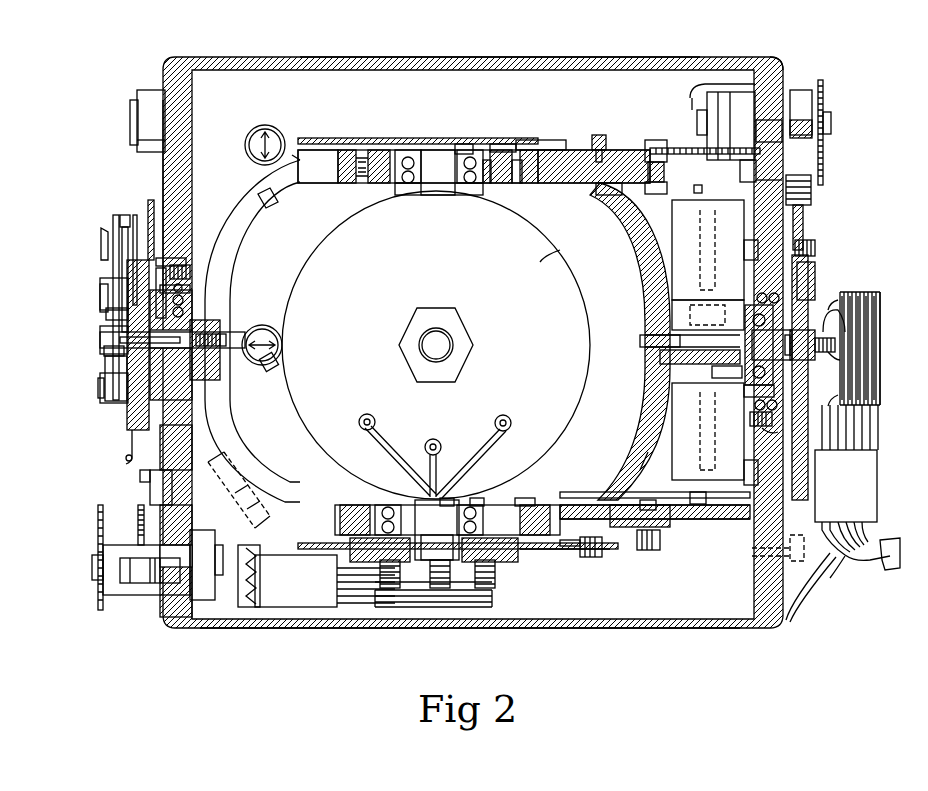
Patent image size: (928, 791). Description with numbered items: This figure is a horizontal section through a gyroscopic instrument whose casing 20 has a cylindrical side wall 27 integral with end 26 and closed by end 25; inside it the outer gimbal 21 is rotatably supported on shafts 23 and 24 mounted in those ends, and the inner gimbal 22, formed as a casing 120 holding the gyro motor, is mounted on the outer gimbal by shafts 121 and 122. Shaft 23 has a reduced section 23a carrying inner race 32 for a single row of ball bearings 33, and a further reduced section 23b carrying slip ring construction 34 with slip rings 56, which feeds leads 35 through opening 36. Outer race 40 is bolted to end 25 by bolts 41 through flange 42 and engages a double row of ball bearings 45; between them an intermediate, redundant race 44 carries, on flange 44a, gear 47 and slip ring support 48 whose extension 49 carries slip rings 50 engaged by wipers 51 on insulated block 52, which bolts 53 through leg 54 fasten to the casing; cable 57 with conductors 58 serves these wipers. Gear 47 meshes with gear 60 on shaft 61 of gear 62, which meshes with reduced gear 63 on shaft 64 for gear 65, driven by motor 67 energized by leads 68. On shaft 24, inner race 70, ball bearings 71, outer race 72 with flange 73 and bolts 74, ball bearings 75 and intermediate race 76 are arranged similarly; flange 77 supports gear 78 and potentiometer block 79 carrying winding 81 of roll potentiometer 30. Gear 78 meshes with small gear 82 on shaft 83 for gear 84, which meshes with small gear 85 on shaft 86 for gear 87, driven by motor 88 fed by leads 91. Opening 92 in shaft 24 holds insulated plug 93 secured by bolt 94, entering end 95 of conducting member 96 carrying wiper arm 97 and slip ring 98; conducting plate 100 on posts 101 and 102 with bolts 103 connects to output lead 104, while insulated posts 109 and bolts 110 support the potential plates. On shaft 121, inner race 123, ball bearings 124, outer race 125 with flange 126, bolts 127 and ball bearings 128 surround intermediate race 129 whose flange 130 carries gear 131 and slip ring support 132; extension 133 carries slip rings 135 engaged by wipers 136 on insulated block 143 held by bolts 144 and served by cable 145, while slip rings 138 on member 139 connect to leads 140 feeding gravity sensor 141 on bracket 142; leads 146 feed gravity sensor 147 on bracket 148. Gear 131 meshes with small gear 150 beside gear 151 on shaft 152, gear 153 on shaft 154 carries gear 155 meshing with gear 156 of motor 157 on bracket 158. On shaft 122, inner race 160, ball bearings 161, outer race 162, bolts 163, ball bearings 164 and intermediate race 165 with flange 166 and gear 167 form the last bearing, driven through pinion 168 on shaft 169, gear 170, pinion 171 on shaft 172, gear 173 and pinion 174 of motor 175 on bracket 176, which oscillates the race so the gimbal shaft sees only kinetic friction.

The casing 20 is at (518, 56).
The outer gimbal 21 is at (252, 218).
The inner gimbal 22 is at (588, 338).
The shaft 23 is at (752, 326).
The reduced section 23a is at (772, 345).
The further reduced shaft section 23b is at (801, 345).
The shaft 24 is at (222, 368).
The end 25 is at (783, 72).
The end 26 is at (192, 136).
The cylindrical side wall 27 is at (612, 58).
The roll potentiometer 30 is at (110, 215).
The inner race 32 is at (752, 370).
The ball bearings 33 is at (748, 392).
The slip ring construction 34 is at (822, 336).
The leads 35 is at (658, 344).
The opening 36 is at (708, 360).
The outer ball bearing race 40 is at (756, 410).
The bolts 41 is at (752, 426).
The flange 42 is at (765, 441).
The intermediate, redundant ball bearing race 44 is at (756, 300).
The flange 44a is at (815, 280).
The ball bearings 45 is at (746, 282).
The gear 47 is at (808, 470).
The cylindrical slip ring support 48 is at (813, 262).
The extension 49 is at (880, 298).
The slip rings 50 is at (870, 290).
The wipers 51 is at (880, 432).
The insulated block 52 is at (870, 484).
The bolts 53 is at (753, 552).
The leg 54 is at (806, 598).
The slip ring 56 is at (826, 356).
The cable 57 is at (882, 542).
The conductors 58 is at (858, 560).
The gear 60 is at (797, 180).
The shaft 61 is at (769, 166).
The gear 62 is at (805, 222).
The reduced gear 63 is at (798, 120).
The shaft 64 is at (769, 117).
The gear 65 is at (826, 105).
The motor 67 is at (722, 160).
The leads 68 is at (702, 96).
The inner race 70 is at (195, 392).
The ball bearings 71 is at (190, 296).
The outer race 72 is at (205, 266).
The flange 73 is at (196, 260).
The bolts 74 is at (168, 262).
The ball bearings 75 is at (205, 284).
The intermediate, redundant bearing race 76 is at (210, 280).
The flange 77 is at (176, 447).
The gear 78 is at (162, 204).
The insulated potentiometer block 79 is at (128, 428).
The winding 81 is at (128, 466).
The small gear 82 is at (164, 490).
The shaft 83 is at (176, 561).
The larger gear 84 is at (138, 526).
The small gear 85 is at (144, 585).
The shaft 86 is at (186, 552).
The larger gear 87 is at (98, 522).
The motor 88 is at (118, 598).
The leads 91 is at (226, 630).
The opening 92 is at (200, 318).
The insulated plug 93 is at (212, 348).
The bolt 94 is at (206, 336).
The end 95 is at (116, 378).
The conducting member 96 is at (100, 338).
The wiper arm 97 is at (108, 314).
The slip ring 98 is at (104, 350).
The conducting plate 100 is at (100, 398).
The post 101 is at (118, 410).
The post 102 is at (106, 284).
The bolts 103 is at (100, 294).
The lead 104 is at (100, 246).
The insulated posts 109 is at (152, 100).
The bolts 110 is at (133, 115).
The casing 120 is at (547, 250).
The shaft 121 is at (437, 530).
The shaft 122 is at (439, 172).
The inner bearing race 123 is at (442, 500).
The ball bearings 124 is at (478, 500).
The outer race 125 is at (525, 504).
The flange 126 is at (538, 518).
The bolts 127 is at (550, 505).
The ball bearings 128 is at (500, 500).
The intermediate, redundant bearing race 129 is at (380, 506).
The flange 130 is at (336, 553).
The gear 131 is at (540, 549).
The slip ring support 132 is at (522, 562).
The extension 133 is at (466, 608).
The slip rings 135 is at (492, 594).
The wipers 136 is at (364, 605).
The slip rings 138 is at (450, 570).
The member 139 is at (420, 580).
The leads 140 is at (470, 446).
The gravity sensor 141 is at (300, 330).
The bracket 142 is at (274, 370).
The insulated block 143 is at (330, 606).
The bolts 144 is at (266, 482).
The cable 145 is at (254, 556).
The leads 146 is at (318, 166).
The gravity sensor 147 is at (300, 138).
The bracket 148 is at (266, 124).
The small gear 150 is at (604, 548).
The large gear 151 is at (584, 560).
The shaft 152 is at (596, 492).
The small gear 153 is at (662, 542).
The shaft 154 is at (658, 516).
The large gear 155 is at (649, 460).
The gear 156 is at (717, 508).
The motor 157 is at (688, 418).
The bracket 158 is at (764, 466).
The inner race 160 is at (462, 158).
The ball bearings 161 is at (470, 186).
The outer race 162 is at (487, 180).
The bolts 163 is at (518, 184).
The ball bearings 164 is at (498, 150).
The intermediate, redundant bearing race 165 is at (405, 186).
The flange 166 is at (530, 142).
The gear 167 is at (386, 148).
The pinion 168 is at (600, 134).
The shaft 169 is at (594, 166).
The larger gear 170 is at (626, 148).
The pinion 171 is at (652, 140).
The shaft 172 is at (664, 170).
The larger gear 173 is at (609, 210).
The pinion 174 is at (690, 210).
The motor 175 is at (718, 190).
The bracket 176 is at (757, 206).